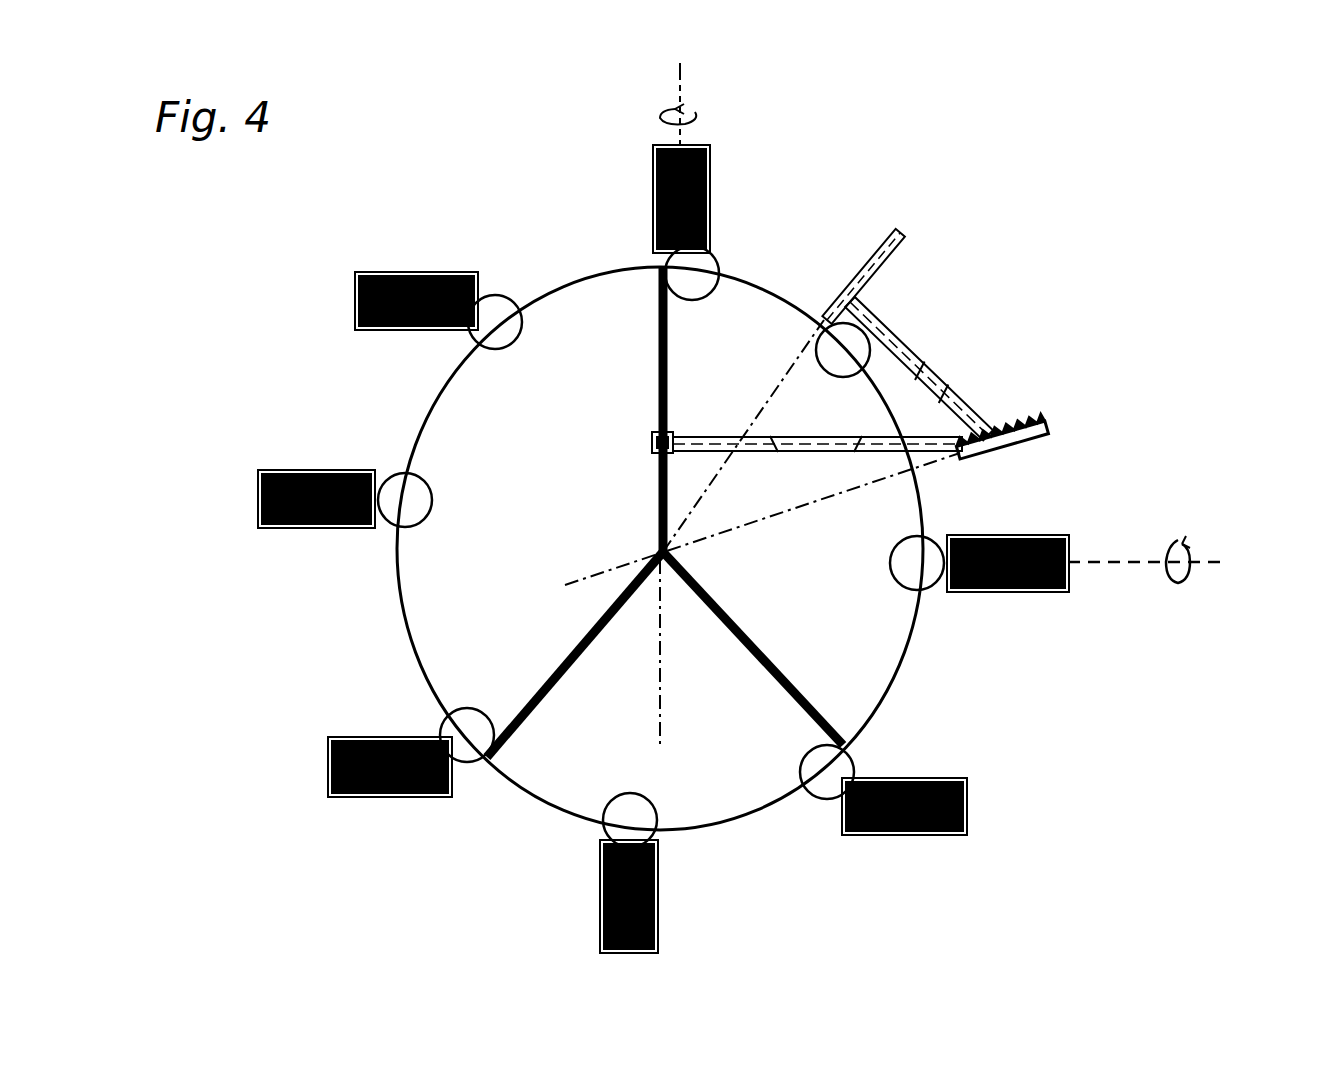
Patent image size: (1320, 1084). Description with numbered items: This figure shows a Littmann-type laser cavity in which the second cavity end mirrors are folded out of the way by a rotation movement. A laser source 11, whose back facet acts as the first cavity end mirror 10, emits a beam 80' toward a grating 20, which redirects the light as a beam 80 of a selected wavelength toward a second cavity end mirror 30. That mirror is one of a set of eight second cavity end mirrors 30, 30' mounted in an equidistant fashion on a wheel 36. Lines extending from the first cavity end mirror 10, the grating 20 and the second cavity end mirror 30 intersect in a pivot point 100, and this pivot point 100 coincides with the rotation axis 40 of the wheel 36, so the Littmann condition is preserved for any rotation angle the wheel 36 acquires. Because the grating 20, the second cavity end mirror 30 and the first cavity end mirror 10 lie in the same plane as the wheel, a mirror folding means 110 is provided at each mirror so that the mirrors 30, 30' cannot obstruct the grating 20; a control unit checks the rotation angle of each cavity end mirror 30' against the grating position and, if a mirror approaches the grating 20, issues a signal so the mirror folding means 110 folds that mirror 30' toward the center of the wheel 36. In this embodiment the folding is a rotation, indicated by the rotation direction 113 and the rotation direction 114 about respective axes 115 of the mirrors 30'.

The first cavity end mirror 10 is at (622, 453).
The laser source 11 is at (643, 411).
The grating 20 is at (1024, 448).
The second cavity end mirror 30 is at (863, 250).
The second cavity end mirrors 30' is at (663, 540).
The wheel 36 is at (626, 548).
The rotation axis 40 is at (665, 512).
The beam 80 is at (930, 370).
The beam 80' is at (817, 424).
The pivot point 100 is at (762, 534).
The mirror folding means 110 is at (661, 546).
The rotation direction 113 is at (645, 104).
The rotation direction 114 is at (1147, 543).
The rotation axis 115 is at (971, 337).